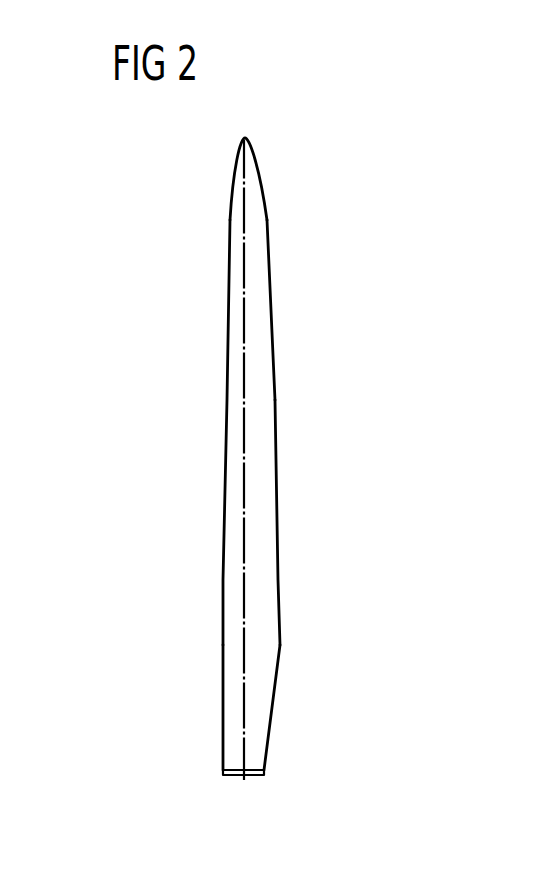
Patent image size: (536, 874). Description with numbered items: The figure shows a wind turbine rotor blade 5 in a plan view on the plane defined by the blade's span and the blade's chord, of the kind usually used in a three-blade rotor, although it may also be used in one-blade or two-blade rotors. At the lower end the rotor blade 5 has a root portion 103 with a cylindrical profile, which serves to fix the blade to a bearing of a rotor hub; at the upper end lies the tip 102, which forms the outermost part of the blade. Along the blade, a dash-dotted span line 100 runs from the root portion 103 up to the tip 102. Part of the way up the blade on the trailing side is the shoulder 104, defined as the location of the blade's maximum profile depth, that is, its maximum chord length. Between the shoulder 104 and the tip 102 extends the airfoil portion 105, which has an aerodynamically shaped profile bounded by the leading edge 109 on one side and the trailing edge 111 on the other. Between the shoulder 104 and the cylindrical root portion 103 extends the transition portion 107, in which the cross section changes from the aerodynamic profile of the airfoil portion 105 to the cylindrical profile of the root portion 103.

The rotor blade 5 is at (178, 392).
The span line 100 is at (247, 430).
The tip 102 is at (245, 137).
The root portion 103 is at (252, 776).
The shoulder 104 is at (280, 645).
The airfoil portion 105 is at (303, 340).
The transition portion 107 is at (313, 712).
The leading edge 109 is at (223, 537).
The trailing edge 111 is at (280, 522).